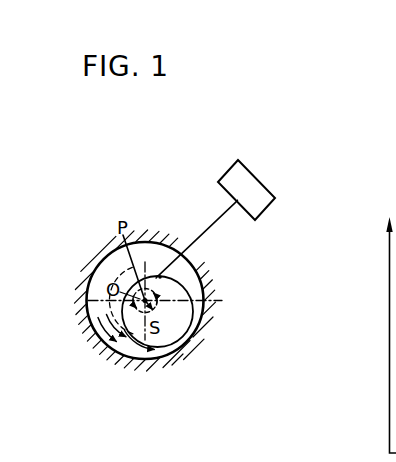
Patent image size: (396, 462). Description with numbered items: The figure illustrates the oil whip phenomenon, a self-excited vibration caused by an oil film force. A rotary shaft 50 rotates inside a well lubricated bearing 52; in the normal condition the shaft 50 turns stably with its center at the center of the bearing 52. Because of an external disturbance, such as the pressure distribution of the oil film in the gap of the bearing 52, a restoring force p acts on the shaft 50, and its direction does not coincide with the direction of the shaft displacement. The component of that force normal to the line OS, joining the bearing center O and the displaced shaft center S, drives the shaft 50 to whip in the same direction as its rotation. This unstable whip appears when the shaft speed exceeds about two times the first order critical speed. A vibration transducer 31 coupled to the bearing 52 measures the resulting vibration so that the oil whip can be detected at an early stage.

The transducer 31 is at (275, 227).
The rotary shaft 50 is at (203, 307).
The bearing 52 is at (88, 318).